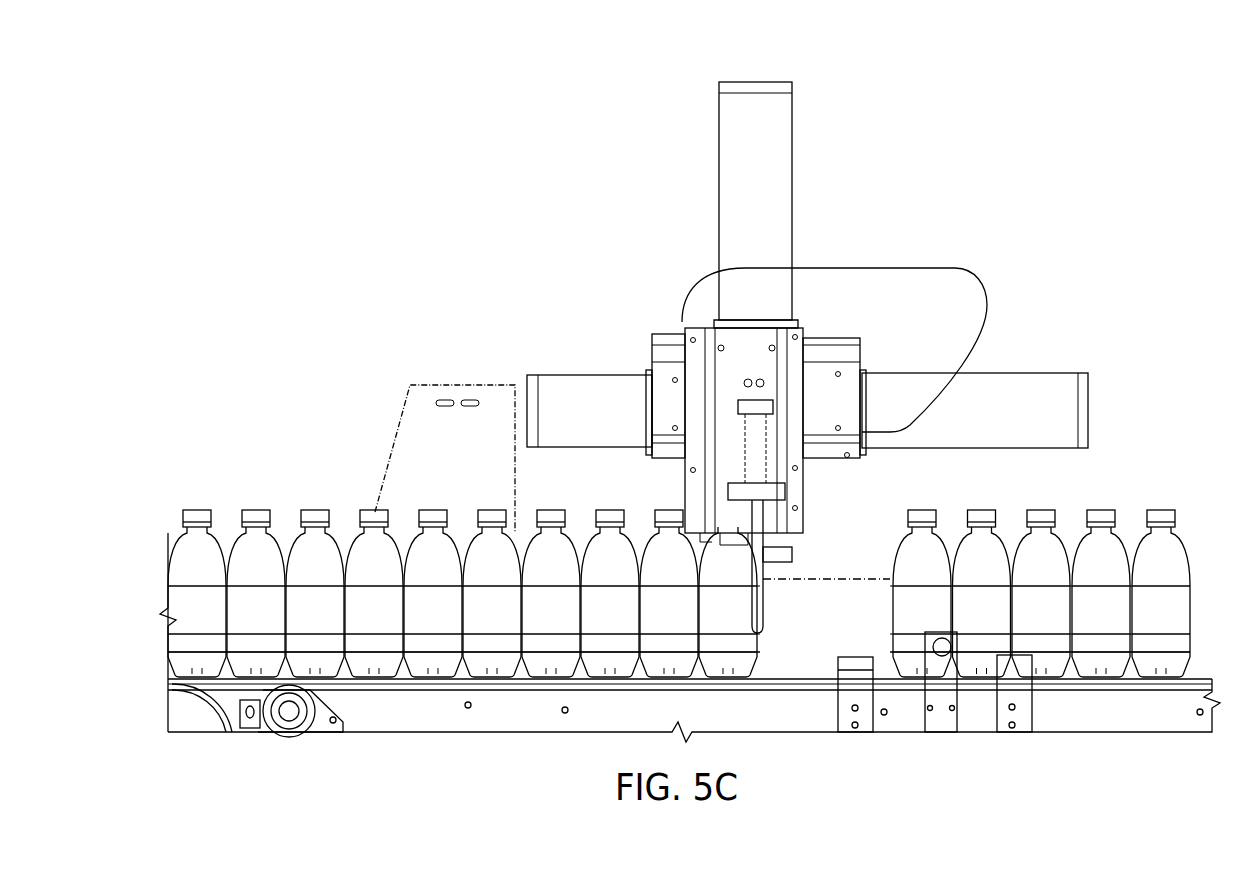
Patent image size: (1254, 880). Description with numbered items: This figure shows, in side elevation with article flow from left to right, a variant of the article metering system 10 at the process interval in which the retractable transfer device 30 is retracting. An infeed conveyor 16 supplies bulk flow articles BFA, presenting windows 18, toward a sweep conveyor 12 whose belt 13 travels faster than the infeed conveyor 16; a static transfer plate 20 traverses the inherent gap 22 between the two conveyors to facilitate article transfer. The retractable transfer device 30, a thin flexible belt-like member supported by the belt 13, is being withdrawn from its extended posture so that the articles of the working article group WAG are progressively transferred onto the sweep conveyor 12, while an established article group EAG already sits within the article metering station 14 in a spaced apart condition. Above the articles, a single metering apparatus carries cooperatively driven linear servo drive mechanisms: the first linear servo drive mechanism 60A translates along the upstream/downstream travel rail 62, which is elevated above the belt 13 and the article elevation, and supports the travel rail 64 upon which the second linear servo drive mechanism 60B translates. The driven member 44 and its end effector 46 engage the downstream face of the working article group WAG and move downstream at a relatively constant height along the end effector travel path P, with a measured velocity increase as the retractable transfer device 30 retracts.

The article metering system 10 is at (1016, 228).
The sweep conveyor 12 is at (678, 672).
The belt 13 is at (500, 690).
The article metering station 14 is at (881, 236).
The infeed conveyor 16 is at (165, 684).
The windows 18 is at (402, 524).
The static transfer plate 20 is at (247, 683).
The gap 22 is at (237, 687).
The retractable transfer device 30 is at (428, 690).
The driven member 44 is at (768, 466).
The end effector 46 is at (765, 606).
The first linear servo drive mechanism 60A is at (834, 398).
The second linear servo drive mechanism 60B is at (777, 445).
The travel rail 62 is at (1056, 425).
The travel rail 64 is at (766, 141).
The end effector travel path P is at (937, 267).
The bulk flow articles BFA is at (183, 506).
The working article group WAG is at (614, 506).
The established article group EAG is at (1190, 512).